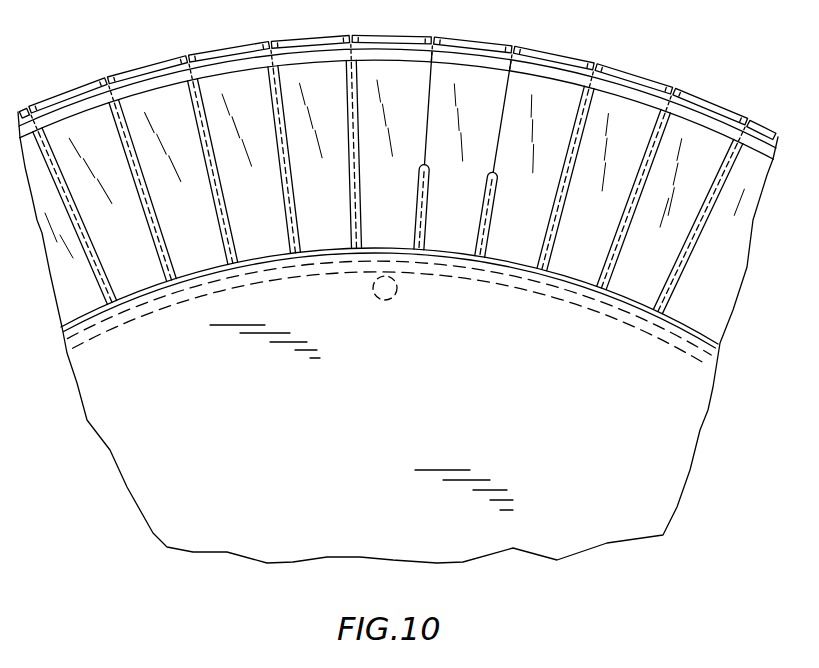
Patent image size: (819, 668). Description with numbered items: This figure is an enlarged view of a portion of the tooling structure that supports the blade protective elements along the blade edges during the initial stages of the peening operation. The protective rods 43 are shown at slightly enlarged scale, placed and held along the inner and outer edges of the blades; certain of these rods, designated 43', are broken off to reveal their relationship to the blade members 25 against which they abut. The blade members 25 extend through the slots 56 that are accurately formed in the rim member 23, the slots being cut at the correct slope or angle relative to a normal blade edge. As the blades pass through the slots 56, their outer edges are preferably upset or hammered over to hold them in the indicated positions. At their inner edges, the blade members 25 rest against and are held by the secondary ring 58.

The rim 23 is at (332, 22).
The blade member 25 is at (80, 130).
The protective rod 43 is at (387, 165).
The broken-off protective rod 43' is at (475, 152).
The slot 56 is at (578, 72).
The secondary ring 58 is at (150, 296).